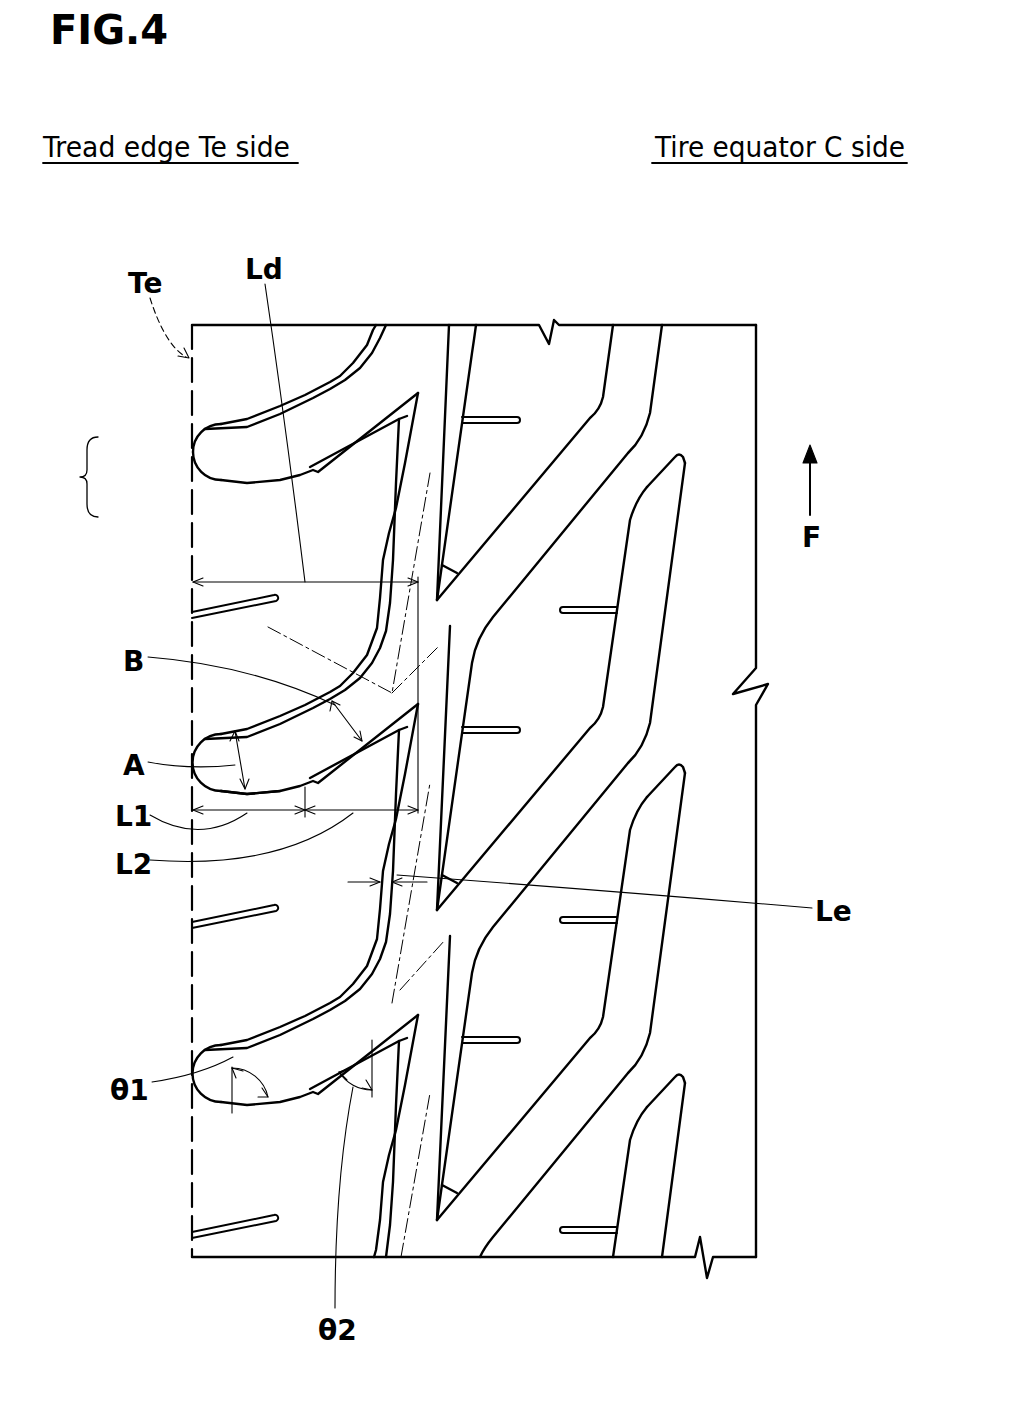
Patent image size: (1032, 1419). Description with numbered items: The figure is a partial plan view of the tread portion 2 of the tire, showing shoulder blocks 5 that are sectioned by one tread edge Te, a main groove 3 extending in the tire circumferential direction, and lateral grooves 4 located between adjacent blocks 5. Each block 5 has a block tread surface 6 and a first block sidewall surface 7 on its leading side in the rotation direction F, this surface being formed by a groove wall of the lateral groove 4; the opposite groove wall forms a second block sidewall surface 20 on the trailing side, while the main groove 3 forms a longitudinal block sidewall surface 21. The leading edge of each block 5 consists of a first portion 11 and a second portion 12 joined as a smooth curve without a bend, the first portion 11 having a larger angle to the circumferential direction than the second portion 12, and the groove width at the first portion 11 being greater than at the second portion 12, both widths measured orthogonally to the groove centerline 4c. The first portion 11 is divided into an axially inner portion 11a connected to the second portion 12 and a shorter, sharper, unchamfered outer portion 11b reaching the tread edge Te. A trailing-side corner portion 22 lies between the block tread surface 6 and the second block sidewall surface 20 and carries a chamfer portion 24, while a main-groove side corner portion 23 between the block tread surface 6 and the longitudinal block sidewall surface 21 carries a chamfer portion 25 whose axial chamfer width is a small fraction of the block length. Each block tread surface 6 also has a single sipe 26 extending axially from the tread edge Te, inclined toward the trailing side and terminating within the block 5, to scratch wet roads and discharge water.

The tread portion 2 is at (702, 286).
The main groove 3 is at (447, 350).
The lateral groove 4 is at (238, 435).
The groove centerline 4c is at (213, 607).
The block 5 is at (186, 550).
The block tread surface 6 is at (228, 1170).
The first block sidewall surface 7 is at (405, 389).
The first portion 11 is at (72, 477).
The inner portion 11a is at (262, 479).
The outer portion 11b is at (197, 487).
The second portion 12 is at (360, 432).
The second block sidewall surface 20 is at (307, 1010).
The longitudinal block sidewall surface 21 is at (356, 921).
The trailing-side corner portion 22 is at (253, 1012).
The main-groove side corner portion 23 is at (382, 901).
The chamfer portion 24 is at (337, 997).
The chamfer portion 25 is at (395, 835).
The sipe 26 is at (232, 1236).